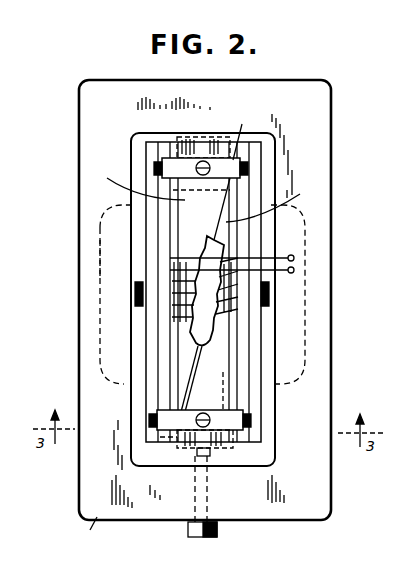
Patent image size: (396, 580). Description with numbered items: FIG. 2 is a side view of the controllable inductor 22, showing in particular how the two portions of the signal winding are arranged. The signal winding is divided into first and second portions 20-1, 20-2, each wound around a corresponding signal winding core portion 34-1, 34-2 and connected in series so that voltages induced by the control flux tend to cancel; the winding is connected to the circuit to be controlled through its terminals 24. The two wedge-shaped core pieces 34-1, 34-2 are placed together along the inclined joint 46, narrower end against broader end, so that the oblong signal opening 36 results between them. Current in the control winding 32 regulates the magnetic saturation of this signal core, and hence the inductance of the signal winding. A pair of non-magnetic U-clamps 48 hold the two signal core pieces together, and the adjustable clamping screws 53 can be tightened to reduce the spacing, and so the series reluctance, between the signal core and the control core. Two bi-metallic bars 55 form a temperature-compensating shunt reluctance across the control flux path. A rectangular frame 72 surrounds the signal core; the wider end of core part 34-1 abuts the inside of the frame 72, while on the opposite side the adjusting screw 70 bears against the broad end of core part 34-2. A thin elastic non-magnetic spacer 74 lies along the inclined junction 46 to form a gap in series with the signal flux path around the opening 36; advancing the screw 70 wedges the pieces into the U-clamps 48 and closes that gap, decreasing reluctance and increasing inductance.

The controllable inductor 22 is at (81, 75).
The rectangular frame 72 is at (86, 533).
The bi-metallic bars 55 is at (342, 350).
The control winding 32 is at (100, 259).
The terminals 24 is at (294, 259).
The adjustable clamping screws 53 is at (211, 152).
The U-clamps 48 is at (229, 174).
The signal winding core portion 34-1 is at (135, 182).
The inclined joint 46 is at (272, 203).
The oblong signal opening 36 is at (203, 282).
The first signal winding portion 20-1 is at (174, 313).
The second signal winding portion 20-2 is at (210, 318).
The spacer 74 is at (191, 381).
The signal winding core portion 34-2 is at (223, 370).
The adjusting screw 70 is at (218, 529).